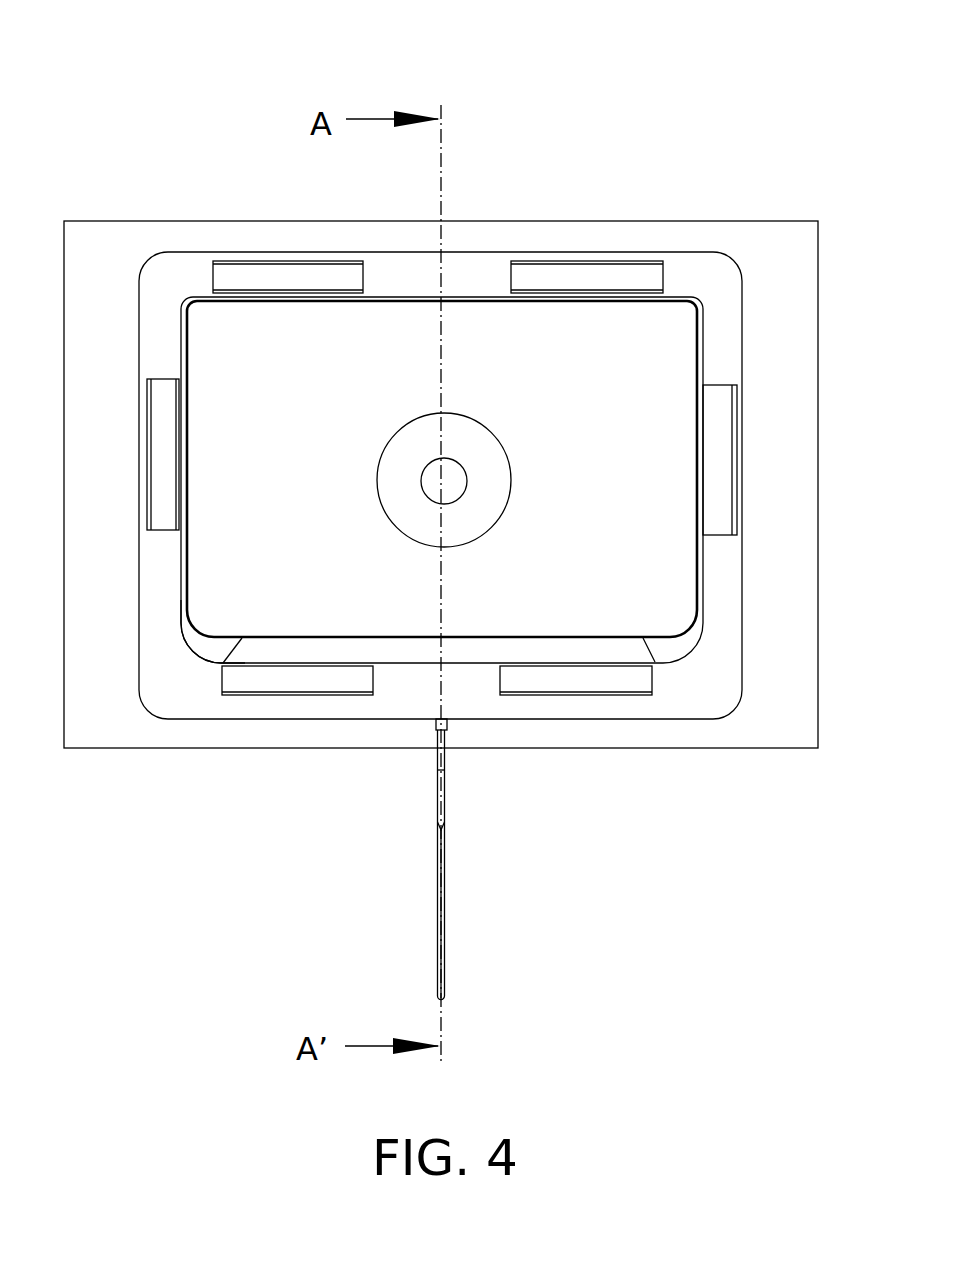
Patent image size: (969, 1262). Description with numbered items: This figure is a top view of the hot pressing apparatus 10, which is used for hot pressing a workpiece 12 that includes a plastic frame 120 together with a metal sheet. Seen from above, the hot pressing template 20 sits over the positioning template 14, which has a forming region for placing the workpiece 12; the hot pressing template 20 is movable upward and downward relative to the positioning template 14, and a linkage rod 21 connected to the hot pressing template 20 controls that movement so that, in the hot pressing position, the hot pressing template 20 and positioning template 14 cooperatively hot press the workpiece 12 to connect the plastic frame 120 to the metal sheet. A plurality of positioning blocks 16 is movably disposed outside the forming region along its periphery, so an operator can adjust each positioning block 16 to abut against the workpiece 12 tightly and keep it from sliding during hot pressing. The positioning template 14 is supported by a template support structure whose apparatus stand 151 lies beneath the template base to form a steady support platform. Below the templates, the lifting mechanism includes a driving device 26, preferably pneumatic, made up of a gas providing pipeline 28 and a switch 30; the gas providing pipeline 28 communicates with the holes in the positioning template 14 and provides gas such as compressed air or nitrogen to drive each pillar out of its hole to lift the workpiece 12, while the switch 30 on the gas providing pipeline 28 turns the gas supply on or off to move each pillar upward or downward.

The hot pressing apparatus 10 is at (684, 100).
The workpiece 12 is at (185, 661).
The positioning template 14 is at (728, 576).
The positioning blocks 16 is at (594, 696).
The hot pressing template 20 is at (481, 473).
The linkage rod 21 is at (453, 473).
The driving device 26 is at (361, 859).
The gas providing pipeline 28 is at (443, 848).
The switch 30 is at (434, 722).
The plastic frame 120 is at (678, 646).
The apparatus stand 151 is at (802, 633).